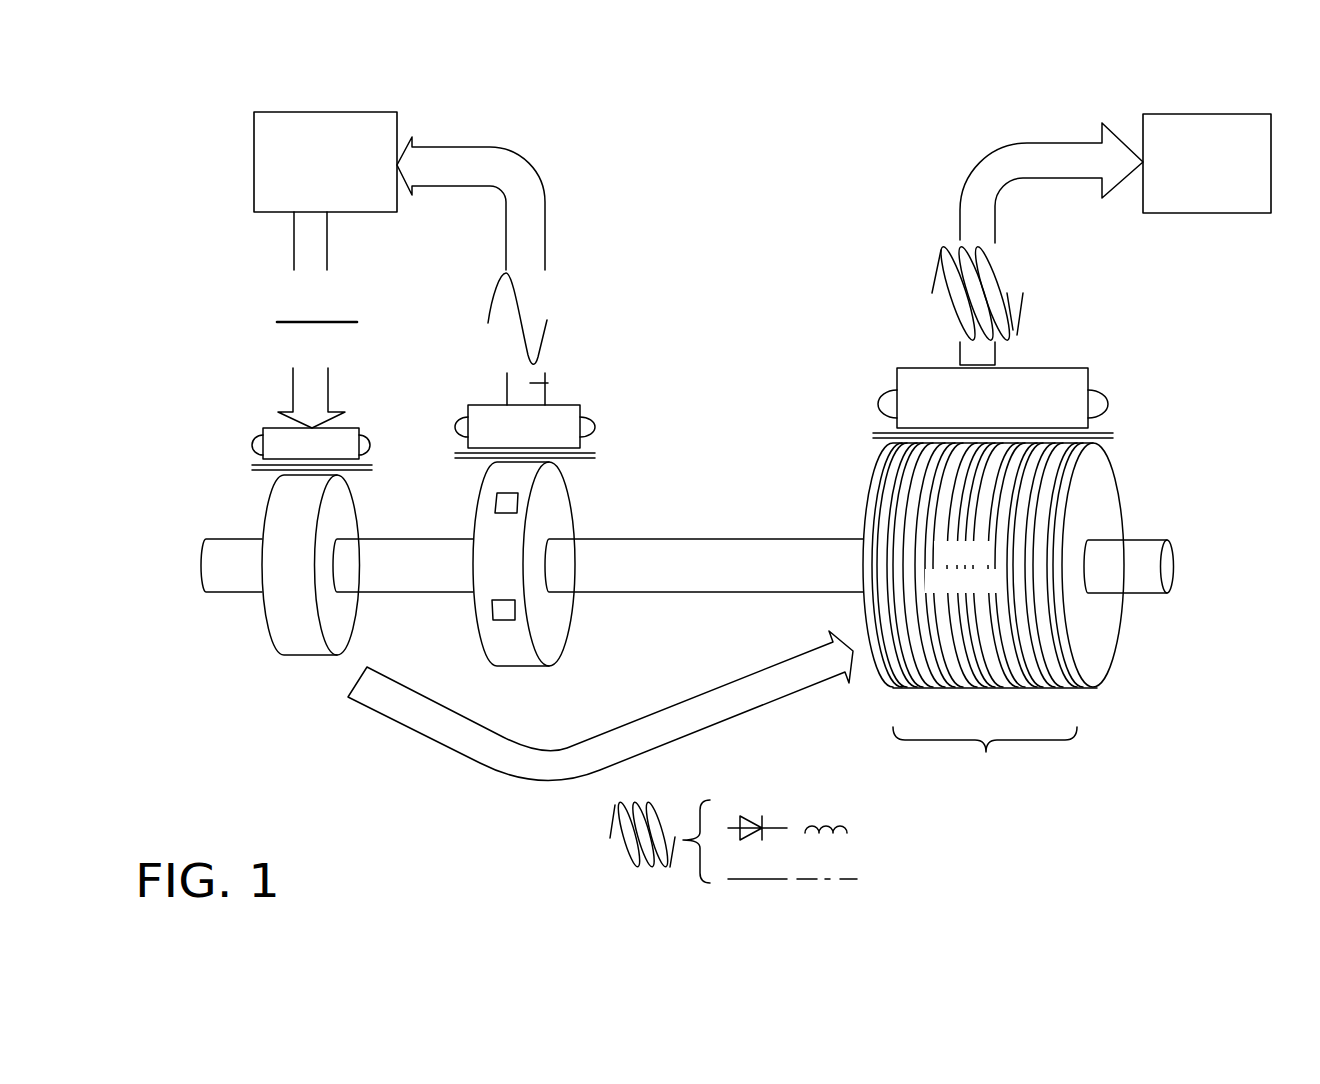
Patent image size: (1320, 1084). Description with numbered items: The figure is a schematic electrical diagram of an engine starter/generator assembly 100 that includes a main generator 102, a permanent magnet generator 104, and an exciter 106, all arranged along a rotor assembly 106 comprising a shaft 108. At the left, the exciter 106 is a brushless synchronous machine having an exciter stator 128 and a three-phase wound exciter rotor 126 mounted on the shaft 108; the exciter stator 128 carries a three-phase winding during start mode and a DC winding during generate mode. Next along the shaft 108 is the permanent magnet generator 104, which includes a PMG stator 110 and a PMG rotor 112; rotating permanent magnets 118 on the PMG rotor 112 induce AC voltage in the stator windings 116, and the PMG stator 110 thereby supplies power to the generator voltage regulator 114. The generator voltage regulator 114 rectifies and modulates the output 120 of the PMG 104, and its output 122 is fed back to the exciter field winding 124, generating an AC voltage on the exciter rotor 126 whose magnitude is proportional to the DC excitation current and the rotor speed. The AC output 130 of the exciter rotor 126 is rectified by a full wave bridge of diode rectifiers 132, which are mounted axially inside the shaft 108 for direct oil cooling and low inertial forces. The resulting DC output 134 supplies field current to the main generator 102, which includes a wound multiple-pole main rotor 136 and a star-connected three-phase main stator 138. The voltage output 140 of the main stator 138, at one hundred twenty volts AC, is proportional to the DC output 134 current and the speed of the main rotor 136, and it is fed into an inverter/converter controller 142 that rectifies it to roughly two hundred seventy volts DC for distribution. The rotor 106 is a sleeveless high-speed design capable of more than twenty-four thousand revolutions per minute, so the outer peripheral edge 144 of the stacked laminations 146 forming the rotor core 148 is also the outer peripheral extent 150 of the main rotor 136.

The engine starter/generator (ES/G) assembly 100 is at (805, 155).
The main generator 102 is at (1135, 662).
The permanent magnet generator (PMG) 104 is at (573, 650).
The exciter / rotor assembly 106 is at (248, 733).
The shaft 108 is at (1142, 550).
The PMG stator 110 is at (562, 403).
The PMG rotor 112 is at (553, 505).
The generator voltage regulator (GVR) 114 is at (388, 112).
The stator windings 116 is at (595, 427).
The permanent magnets 118 is at (502, 598).
The output of PMG 120 is at (548, 383).
The output of GVR 122 is at (313, 380).
The exciter field winding 124 is at (370, 453).
The exciter rotor 126 is at (268, 636).
The exciter stator 128 is at (248, 432).
The AC output of exciter rotor 130 is at (395, 705).
The diode rectifiers 132 is at (847, 848).
The DC output 134 is at (827, 660).
The main rotor 136 is at (1117, 480).
The main stator 138 is at (1043, 378).
The voltage output of main stator 140 is at (1038, 155).
The inverter/converter controller (ICC) 142 is at (1225, 203).
The outer peripheral edge of laminations 144 is at (965, 673).
The laminations 146 is at (977, 613).
The rotor core 148 is at (1063, 698).
The outer peripheral extent of rotor 150 is at (927, 678).